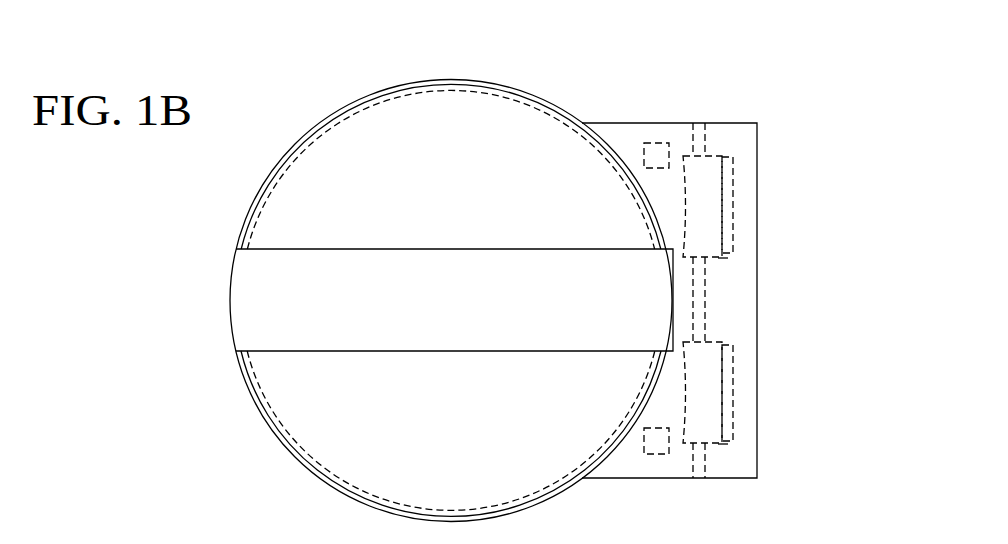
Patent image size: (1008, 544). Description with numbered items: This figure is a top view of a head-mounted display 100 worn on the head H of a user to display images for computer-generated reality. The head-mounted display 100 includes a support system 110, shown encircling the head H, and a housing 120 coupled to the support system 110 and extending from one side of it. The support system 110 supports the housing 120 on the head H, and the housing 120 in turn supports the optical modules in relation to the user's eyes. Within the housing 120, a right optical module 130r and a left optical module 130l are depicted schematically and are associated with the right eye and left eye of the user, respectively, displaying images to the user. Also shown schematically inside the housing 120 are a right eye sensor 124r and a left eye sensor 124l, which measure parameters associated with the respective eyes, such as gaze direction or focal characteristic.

The head-mounted display 100 is at (682, 43).
The support system 110 is at (532, 92).
The housing 120 is at (757, 142).
The left eye sensor 124l is at (645, 168).
The right eye sensor 124r is at (645, 428).
The left optical module 130l is at (733, 207).
The right optical module 130r is at (733, 392).
The head H is at (282, 425).